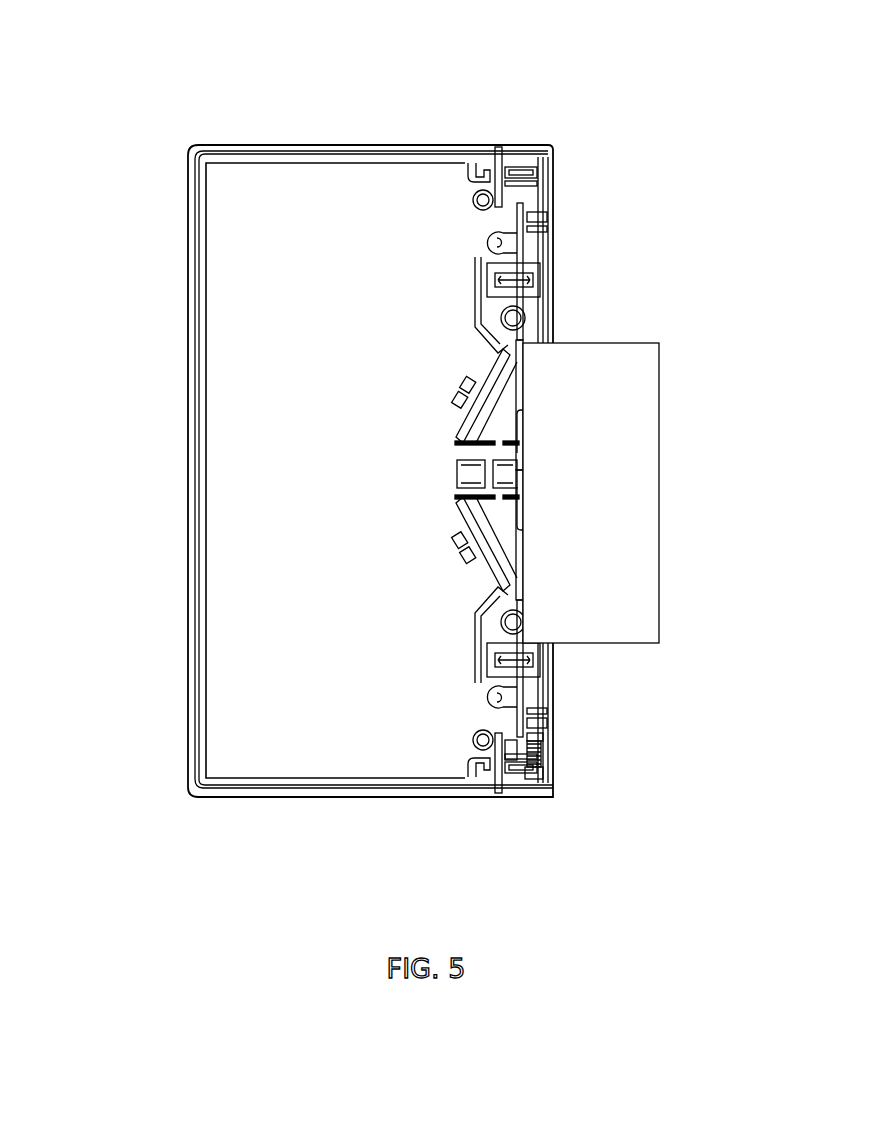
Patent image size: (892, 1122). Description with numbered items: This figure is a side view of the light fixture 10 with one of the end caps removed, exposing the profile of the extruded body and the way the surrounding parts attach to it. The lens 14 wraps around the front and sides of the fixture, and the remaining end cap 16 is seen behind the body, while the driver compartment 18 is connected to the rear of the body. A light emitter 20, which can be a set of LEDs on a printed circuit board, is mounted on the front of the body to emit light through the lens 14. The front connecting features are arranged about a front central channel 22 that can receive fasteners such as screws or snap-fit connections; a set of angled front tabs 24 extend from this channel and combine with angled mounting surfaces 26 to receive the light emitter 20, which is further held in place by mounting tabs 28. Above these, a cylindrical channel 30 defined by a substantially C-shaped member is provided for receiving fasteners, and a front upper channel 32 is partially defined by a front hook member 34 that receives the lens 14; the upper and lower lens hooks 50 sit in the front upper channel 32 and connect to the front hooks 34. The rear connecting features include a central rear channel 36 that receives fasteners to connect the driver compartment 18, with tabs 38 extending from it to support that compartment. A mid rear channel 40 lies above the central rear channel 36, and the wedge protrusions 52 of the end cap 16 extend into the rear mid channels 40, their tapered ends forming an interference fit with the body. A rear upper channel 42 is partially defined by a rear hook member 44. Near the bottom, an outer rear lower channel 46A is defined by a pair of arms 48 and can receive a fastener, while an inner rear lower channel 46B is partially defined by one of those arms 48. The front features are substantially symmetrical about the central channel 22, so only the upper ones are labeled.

The light fixture 10 is at (183, 93).
The lens 14 is at (203, 285).
The end cap 16 is at (258, 208).
The driver compartment 18 is at (659, 343).
The light emitter 20 is at (455, 437).
The front central channel 22 is at (464, 478).
The angled front tab 24 is at (463, 456).
The angled mounting surface 26 is at (492, 397).
The mounting tab 28 is at (498, 353).
The cylindrical channel 30 is at (492, 243).
The front upper channel 32 is at (488, 185).
The front hook member 34 is at (480, 178).
The central rear channel 36 is at (517, 472).
The tab 38 is at (521, 451).
The mid rear channel 40 is at (541, 293).
The rear upper channel 42 is at (525, 181).
The rear hook member 44 is at (540, 173).
The outer rear lower channel 46A is at (535, 737).
The inner rear lower channel 46B is at (510, 757).
The arm 48 is at (541, 762).
The lens hook 50 is at (498, 165).
The wedge protrusion 52 is at (541, 279).